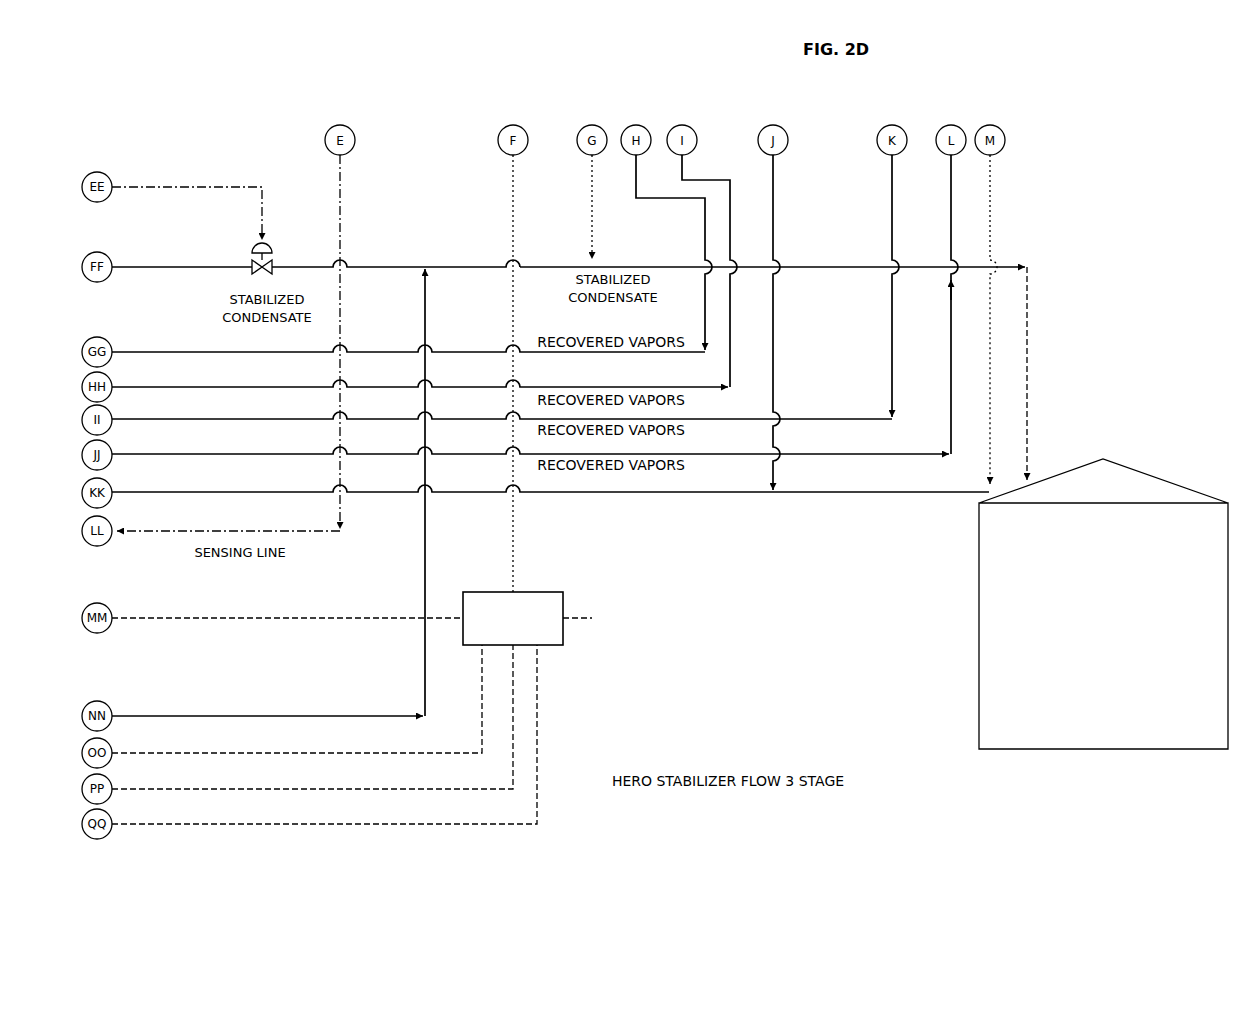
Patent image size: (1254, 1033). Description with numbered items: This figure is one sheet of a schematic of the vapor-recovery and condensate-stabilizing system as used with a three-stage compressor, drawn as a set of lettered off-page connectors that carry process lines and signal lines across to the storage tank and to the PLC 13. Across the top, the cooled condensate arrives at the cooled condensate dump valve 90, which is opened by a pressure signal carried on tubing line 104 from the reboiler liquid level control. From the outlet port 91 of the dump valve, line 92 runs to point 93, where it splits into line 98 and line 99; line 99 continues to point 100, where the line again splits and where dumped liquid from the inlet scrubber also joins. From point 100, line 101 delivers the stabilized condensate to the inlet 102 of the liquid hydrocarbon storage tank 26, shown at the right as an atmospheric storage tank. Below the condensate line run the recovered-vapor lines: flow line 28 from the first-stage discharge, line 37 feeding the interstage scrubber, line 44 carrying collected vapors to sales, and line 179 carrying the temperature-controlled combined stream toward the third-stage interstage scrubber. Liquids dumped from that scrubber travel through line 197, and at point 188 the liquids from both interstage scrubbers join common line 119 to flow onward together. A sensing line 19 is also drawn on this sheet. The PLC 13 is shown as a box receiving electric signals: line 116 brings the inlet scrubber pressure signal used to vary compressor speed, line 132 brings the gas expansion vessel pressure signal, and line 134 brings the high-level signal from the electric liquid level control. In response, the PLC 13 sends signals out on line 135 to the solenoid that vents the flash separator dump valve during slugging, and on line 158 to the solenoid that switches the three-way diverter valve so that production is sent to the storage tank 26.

The PLC 13 is at (535, 592).
The sensing line 19 is at (342, 197).
The liquid hydrocarbon storage tank 26 is at (1158, 478).
The flow line 28 is at (160, 352).
The line 37 is at (160, 387).
The line 44 is at (160, 419).
The cooled condensate dump valve 90 is at (272, 246).
The outlet port 91 is at (275, 266).
The line 92 is at (370, 266).
The point 93 is at (432, 266).
The line 98 is at (428, 525).
The line 99 is at (572, 265).
The point 100 is at (600, 265).
The line 101 is at (828, 266).
The inlet 102 is at (1025, 484).
The tubing line 104 is at (188, 187).
The line 116 is at (515, 210).
The common line 119 is at (775, 210).
The line 132 is at (262, 824).
The line 134 is at (262, 753).
The line 135 is at (275, 618).
The line 158 is at (262, 789).
The line 179 is at (160, 454).
The point 188 is at (775, 494).
The line 197 is at (235, 494).